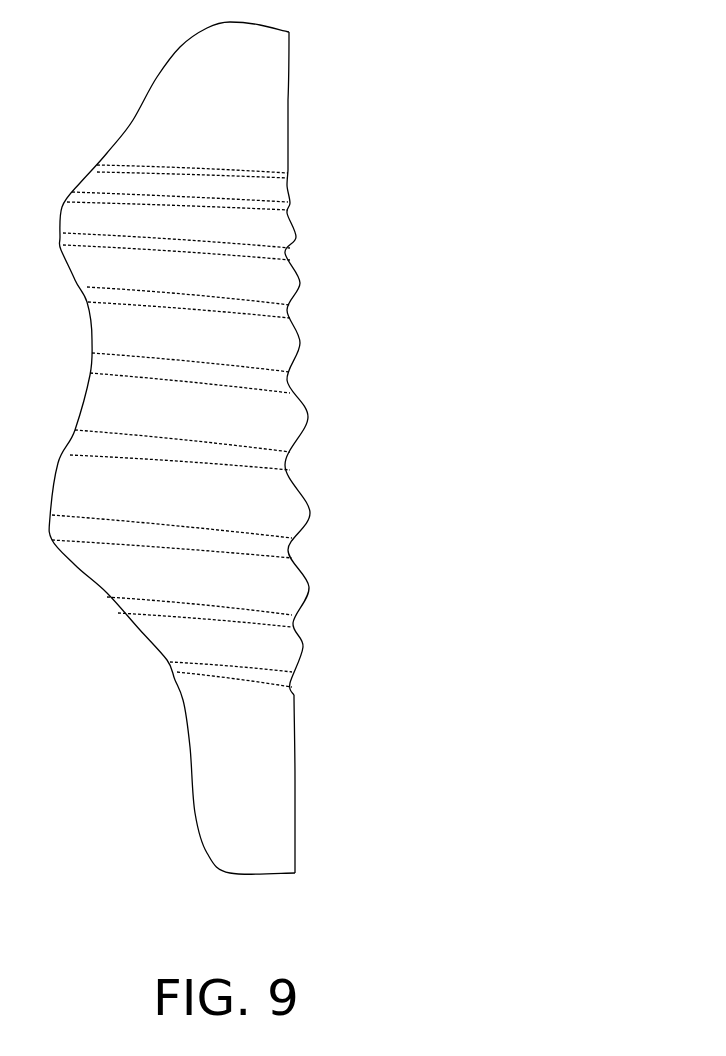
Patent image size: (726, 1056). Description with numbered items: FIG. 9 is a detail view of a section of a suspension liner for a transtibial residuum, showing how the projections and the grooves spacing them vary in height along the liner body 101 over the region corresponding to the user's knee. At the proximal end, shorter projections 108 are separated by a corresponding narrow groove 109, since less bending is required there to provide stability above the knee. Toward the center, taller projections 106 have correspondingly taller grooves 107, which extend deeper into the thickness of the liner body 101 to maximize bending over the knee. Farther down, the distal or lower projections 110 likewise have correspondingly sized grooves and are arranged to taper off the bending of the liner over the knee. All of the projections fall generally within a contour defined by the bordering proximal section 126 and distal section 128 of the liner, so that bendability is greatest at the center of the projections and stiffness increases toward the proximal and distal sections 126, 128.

The liner body 101 is at (333, 44).
The proximal section 126 is at (289, 128).
The shorter projections 108 is at (288, 203).
The narrow groove 109 is at (288, 210).
The taller projections 106 is at (307, 413).
The taller grooves 107 is at (285, 465).
The distal projections 110 is at (303, 647).
The distal section 128 is at (297, 757).